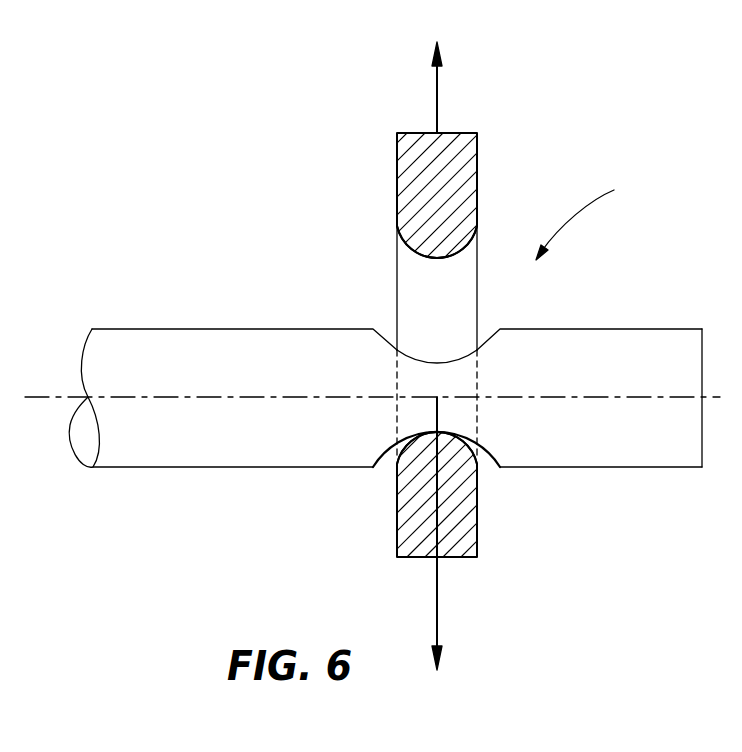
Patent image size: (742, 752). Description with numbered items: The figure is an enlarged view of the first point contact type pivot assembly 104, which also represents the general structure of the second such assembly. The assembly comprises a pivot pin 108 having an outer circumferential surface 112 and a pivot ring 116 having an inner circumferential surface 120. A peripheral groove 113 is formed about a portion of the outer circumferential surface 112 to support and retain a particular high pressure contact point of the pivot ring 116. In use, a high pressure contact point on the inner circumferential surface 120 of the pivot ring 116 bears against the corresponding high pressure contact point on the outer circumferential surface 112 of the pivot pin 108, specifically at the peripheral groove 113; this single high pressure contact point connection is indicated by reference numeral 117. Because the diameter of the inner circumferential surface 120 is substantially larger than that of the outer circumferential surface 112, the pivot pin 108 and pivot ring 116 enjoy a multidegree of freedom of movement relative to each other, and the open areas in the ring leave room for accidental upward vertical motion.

The first point contact type pivot assembly 104 is at (591, 214).
The pivot pin 108 is at (251, 376).
The outer circumferential surface 112 is at (293, 329).
The peripheral groove 113 is at (462, 359).
The pivot ring 116 is at (447, 176).
The connection of high pressure contact points 117 is at (438, 432).
The inner circumferential surface 120 is at (430, 258).